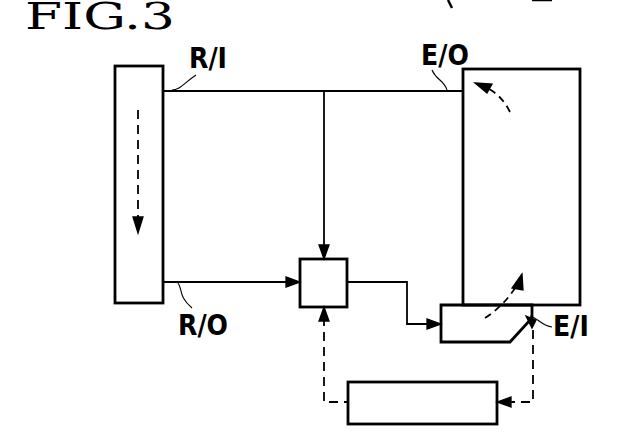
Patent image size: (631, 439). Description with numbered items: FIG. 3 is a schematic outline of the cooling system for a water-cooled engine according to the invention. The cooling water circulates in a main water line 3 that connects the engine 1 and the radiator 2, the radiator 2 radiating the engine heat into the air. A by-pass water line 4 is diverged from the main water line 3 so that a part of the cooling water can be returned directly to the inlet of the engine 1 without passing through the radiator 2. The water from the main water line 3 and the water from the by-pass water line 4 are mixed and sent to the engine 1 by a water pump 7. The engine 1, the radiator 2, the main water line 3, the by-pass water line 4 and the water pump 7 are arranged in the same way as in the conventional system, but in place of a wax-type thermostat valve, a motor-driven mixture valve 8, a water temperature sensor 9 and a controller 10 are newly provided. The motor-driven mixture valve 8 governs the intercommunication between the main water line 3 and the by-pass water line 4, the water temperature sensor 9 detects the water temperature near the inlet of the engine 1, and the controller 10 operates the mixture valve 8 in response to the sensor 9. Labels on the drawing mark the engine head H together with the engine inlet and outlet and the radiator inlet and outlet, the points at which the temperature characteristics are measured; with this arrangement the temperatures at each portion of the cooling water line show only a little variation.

The engine 1 is at (563, 80).
The radiator 2 is at (115, 88).
The main water line 3 is at (290, 90).
The by-pass water line 4 is at (325, 178).
The water pump 7 is at (456, 338).
The motor-driven mixture valve 8 is at (307, 295).
The water temperature sensor 9 is at (530, 328).
The controller 10 is at (478, 381).
The engine head H is at (532, 80).